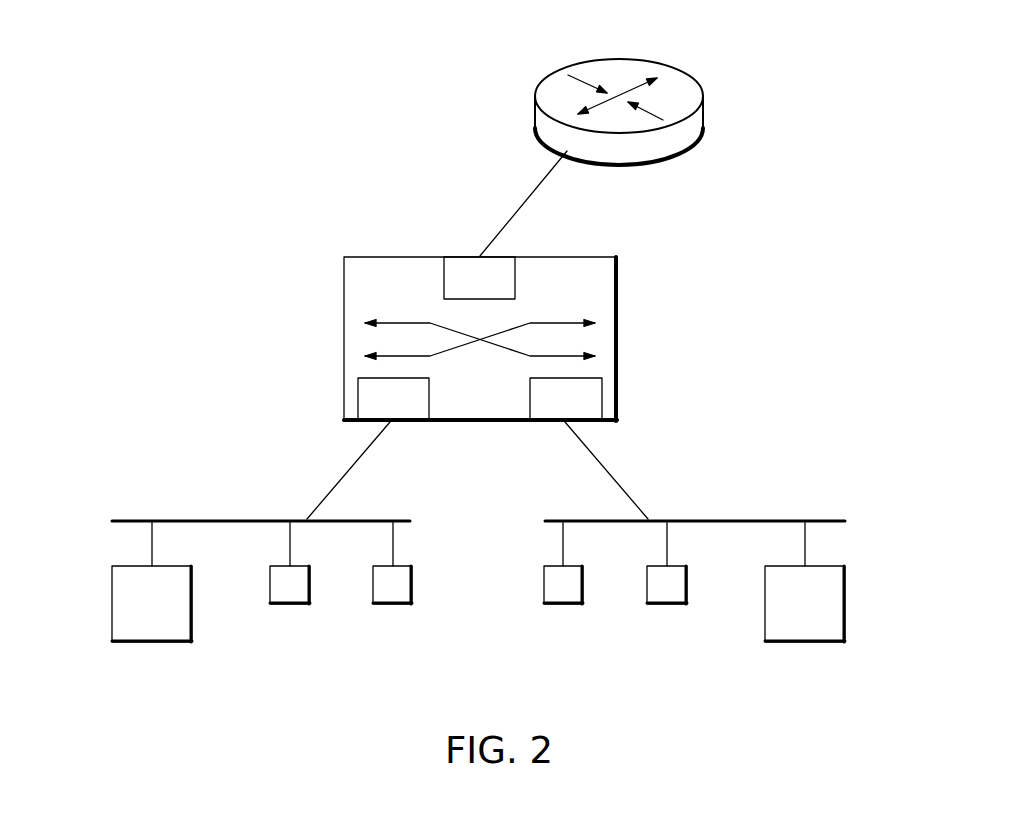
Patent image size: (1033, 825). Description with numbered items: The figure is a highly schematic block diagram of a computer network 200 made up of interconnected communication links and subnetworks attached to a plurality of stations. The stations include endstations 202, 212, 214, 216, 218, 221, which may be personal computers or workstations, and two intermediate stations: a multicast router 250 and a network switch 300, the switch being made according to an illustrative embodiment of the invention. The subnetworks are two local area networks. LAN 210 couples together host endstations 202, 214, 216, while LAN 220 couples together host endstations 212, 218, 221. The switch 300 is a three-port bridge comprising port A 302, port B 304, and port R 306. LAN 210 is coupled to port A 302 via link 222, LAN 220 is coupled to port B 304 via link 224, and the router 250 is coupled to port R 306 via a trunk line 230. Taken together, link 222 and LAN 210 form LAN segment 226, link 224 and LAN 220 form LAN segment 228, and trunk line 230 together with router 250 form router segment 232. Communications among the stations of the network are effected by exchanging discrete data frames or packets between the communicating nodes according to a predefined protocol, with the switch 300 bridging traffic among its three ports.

The computer network 200 is at (315, 118).
The multicast router 250 is at (643, 58).
The router segment 232 is at (585, 183).
The trunk line 230 is at (538, 184).
The network switch 300 is at (618, 328).
The port R 306 is at (457, 256).
The port A 302 is at (418, 422).
The port B 304 is at (545, 422).
The link 222 is at (345, 473).
The link 224 is at (607, 472).
The local area network 210 is at (185, 519).
The local area network 220 is at (720, 519).
The LAN segment 226 is at (393, 503).
The LAN segment 228 is at (792, 502).
The endstation 202 is at (152, 644).
The endstation 212 is at (805, 644).
The endstation 214 is at (290, 605).
The endstation 216 is at (392, 605).
The endstation 218 is at (562, 605).
The endstation 221 is at (665, 605).